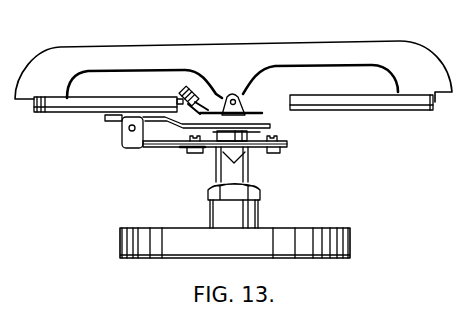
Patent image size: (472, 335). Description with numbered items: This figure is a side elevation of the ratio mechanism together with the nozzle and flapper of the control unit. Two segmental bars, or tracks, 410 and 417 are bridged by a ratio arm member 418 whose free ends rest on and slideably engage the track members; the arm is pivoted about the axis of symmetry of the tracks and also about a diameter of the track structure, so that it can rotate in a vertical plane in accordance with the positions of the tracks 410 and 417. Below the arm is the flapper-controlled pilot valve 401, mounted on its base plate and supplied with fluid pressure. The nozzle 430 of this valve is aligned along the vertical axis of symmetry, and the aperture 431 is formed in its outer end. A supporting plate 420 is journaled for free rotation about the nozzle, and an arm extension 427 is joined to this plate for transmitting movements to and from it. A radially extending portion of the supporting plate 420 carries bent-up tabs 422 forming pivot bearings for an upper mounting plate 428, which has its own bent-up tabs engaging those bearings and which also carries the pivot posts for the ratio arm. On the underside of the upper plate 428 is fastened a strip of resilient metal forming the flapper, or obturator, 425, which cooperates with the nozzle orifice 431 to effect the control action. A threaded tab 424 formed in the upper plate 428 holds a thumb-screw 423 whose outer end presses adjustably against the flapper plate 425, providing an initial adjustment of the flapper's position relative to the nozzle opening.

The flapper-controlled pilot valve 401 is at (345, 240).
The bar or track 410 is at (390, 103).
The bar or track 417 is at (72, 108).
The ratio arm member 418 is at (105, 51).
The supporting plate 420 is at (167, 145).
The bent-up tabs 422 is at (122, 141).
The thumb-screw 423 is at (182, 97).
The threaded tab 424 is at (201, 97).
The flapper or obturator 425 is at (268, 124).
The arm extension 427 is at (191, 151).
The upper mounting plate 428 is at (242, 106).
The nozzle 430 is at (248, 174).
The aperture or nozzle orifice 431 is at (272, 137).